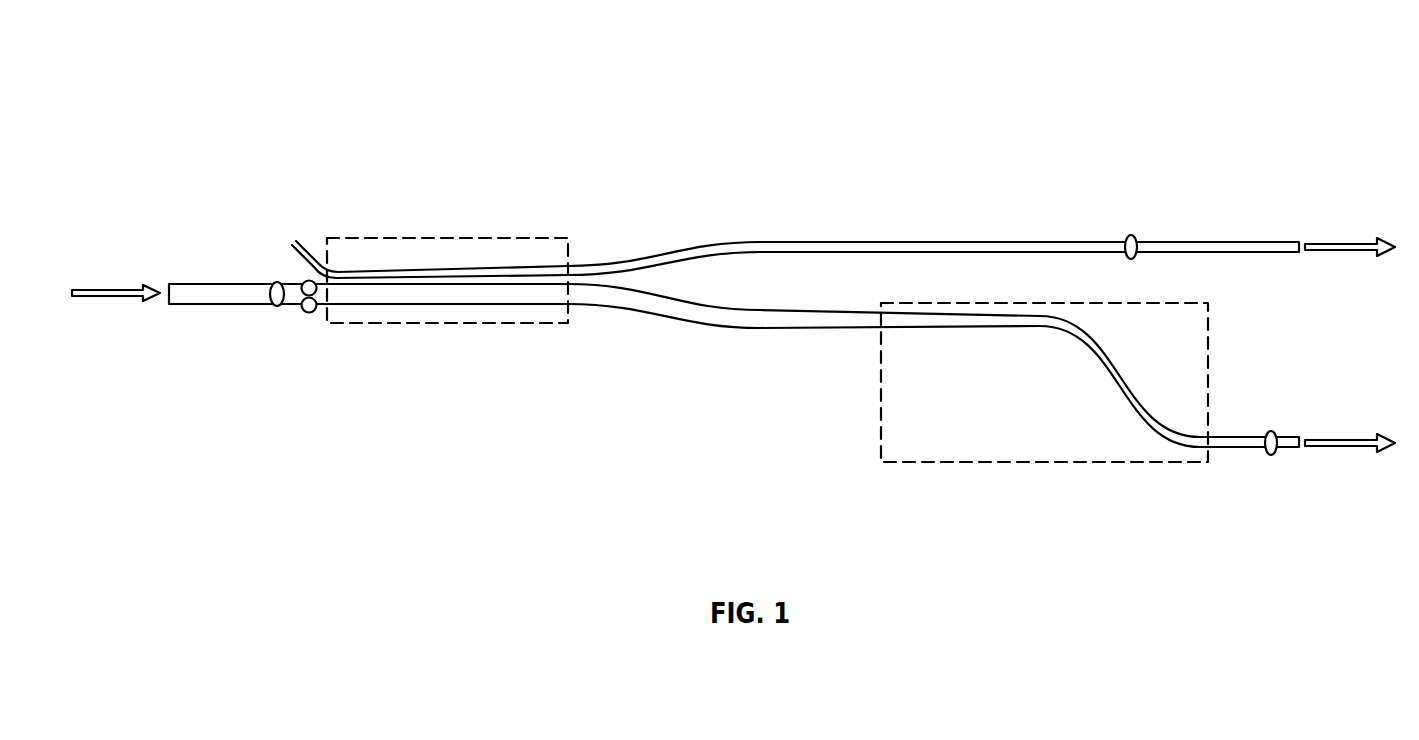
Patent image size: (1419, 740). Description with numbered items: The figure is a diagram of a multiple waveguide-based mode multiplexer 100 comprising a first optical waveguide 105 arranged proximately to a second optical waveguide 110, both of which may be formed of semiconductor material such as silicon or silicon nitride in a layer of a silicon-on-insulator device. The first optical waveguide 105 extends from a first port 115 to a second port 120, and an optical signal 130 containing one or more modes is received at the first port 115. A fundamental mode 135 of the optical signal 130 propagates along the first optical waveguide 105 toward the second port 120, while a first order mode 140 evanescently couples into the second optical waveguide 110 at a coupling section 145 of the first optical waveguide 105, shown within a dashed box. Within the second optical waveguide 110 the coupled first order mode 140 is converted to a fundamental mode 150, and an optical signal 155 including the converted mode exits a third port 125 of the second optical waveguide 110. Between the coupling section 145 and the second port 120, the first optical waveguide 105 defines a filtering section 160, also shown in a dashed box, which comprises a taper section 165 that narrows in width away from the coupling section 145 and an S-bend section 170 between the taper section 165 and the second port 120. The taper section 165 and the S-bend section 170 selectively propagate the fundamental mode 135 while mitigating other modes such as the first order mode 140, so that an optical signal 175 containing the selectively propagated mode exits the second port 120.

The waveguide-based mode multiplexer 100 is at (1280, 124).
The first optical waveguide 105 is at (640, 313).
The second optical waveguide 110 is at (730, 240).
The first port 115 is at (190, 305).
The second port 120 is at (1295, 437).
The third port 125 is at (1265, 253).
The optical signal 130 is at (100, 298).
The fundamental mode 135 is at (1271, 455).
The first order mode 140 is at (312, 313).
The coupling section 145 is at (462, 323).
The fundamental mode 150 is at (1131, 235).
The optical signal 155 is at (1350, 253).
The filtering section 160 is at (913, 463).
The taper section 165 is at (938, 329).
The S-bend section 170 is at (1090, 366).
The optical signal 175 is at (1370, 437).